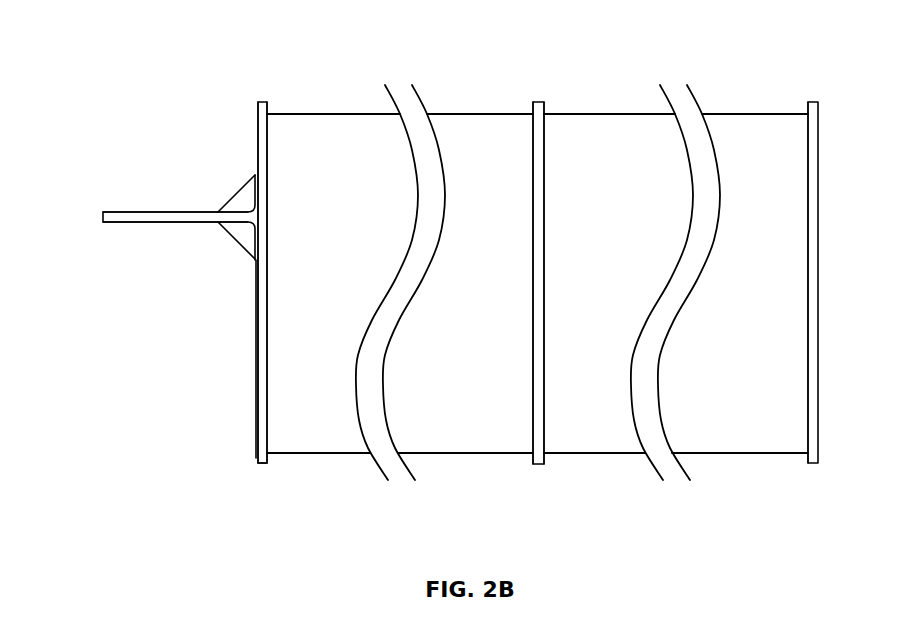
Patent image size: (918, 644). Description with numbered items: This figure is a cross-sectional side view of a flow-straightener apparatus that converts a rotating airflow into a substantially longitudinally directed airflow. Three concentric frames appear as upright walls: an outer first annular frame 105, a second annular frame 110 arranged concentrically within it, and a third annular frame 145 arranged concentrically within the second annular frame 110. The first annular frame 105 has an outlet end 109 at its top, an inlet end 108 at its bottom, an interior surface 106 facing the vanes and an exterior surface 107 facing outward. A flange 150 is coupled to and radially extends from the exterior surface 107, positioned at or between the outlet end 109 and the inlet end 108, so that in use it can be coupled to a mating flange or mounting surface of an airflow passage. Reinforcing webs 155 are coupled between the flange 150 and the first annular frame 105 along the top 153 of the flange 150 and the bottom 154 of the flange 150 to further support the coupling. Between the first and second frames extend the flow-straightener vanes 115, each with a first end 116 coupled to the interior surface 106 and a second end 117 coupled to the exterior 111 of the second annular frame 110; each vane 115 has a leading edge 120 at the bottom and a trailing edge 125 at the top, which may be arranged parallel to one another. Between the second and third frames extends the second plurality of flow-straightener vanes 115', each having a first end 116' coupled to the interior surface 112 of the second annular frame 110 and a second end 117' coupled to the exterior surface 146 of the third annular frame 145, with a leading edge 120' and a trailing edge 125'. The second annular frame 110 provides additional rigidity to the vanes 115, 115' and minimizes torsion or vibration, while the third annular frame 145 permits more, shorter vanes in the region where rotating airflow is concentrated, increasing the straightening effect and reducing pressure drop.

The outlet end 109 is at (262, 101).
The second annular frame 110 is at (538, 101).
The third annular frame 145 is at (813, 101).
The first end 116 is at (333, 99).
The second end 117 is at (480, 99).
The first end 116' is at (609, 99).
The second end 117' is at (755, 99).
The flow-straightener vanes 115 is at (383, 252).
The trailing edge 125 is at (437, 252).
The second plurality of flow-straightener vanes 115' is at (659, 252).
The trailing edge 125' is at (715, 252).
The leading edge 120 is at (400, 485).
The leading edge 120' is at (676, 485).
The flange 150 is at (127, 220).
The first annular frame 105 is at (258, 345).
The reinforcing webs 155 is at (237, 203).
The top of the flange 153 is at (190, 209).
The bottom of the flange 154 is at (190, 227).
The exterior surface 107 is at (256, 418).
The interior surface 106 is at (268, 402).
The inlet end 108 is at (261, 465).
The exterior 111 is at (531, 402).
The interior surface 112 is at (546, 402).
The exterior surface 146 is at (806, 392).